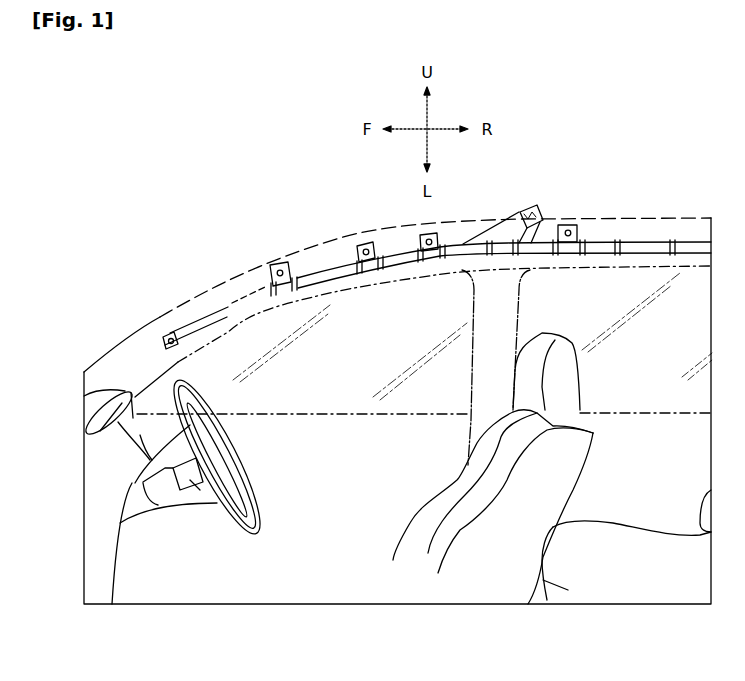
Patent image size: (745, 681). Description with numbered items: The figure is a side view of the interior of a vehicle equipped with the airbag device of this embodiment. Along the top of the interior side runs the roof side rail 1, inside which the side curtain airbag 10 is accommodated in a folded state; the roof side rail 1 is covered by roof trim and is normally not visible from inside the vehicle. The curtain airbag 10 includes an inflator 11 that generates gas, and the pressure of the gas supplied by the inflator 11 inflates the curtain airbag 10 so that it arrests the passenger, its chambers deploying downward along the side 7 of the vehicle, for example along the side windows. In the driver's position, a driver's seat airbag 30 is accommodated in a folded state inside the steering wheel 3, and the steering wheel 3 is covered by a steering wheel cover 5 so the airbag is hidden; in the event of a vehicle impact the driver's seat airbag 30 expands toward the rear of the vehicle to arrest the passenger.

The roof side rail 1 is at (490, 237).
The steering wheel 3 is at (148, 458).
The steering wheel cover 5 is at (240, 468).
The side of the vehicle 7 is at (255, 328).
The side curtain airbag 10 is at (397, 262).
The inflator 11 is at (514, 214).
The driver's seat airbag 30 is at (189, 480).